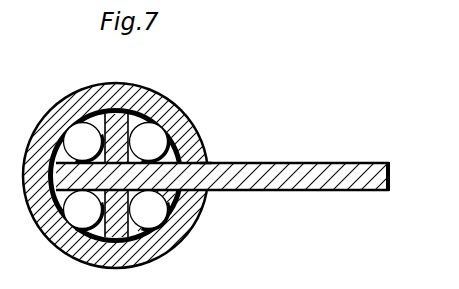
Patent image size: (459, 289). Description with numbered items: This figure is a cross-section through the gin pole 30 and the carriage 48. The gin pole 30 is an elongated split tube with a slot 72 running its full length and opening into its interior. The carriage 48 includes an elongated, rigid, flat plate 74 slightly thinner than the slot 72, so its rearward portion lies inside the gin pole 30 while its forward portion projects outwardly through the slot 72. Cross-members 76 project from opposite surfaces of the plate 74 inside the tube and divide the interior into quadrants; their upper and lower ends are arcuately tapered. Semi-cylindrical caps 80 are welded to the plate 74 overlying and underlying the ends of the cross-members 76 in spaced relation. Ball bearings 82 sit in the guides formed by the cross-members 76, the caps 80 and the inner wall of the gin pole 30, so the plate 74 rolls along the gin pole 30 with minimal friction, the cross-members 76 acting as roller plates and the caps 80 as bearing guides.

The gin pole 30 is at (155, 97).
The carriage 48 is at (229, 144).
The slot 72 is at (236, 162).
The flat plate 74 is at (323, 170).
The cross-members 76 is at (110, 127).
The semi-cylindrical caps 80 is at (177, 198).
The ball bearings 82 is at (152, 207).